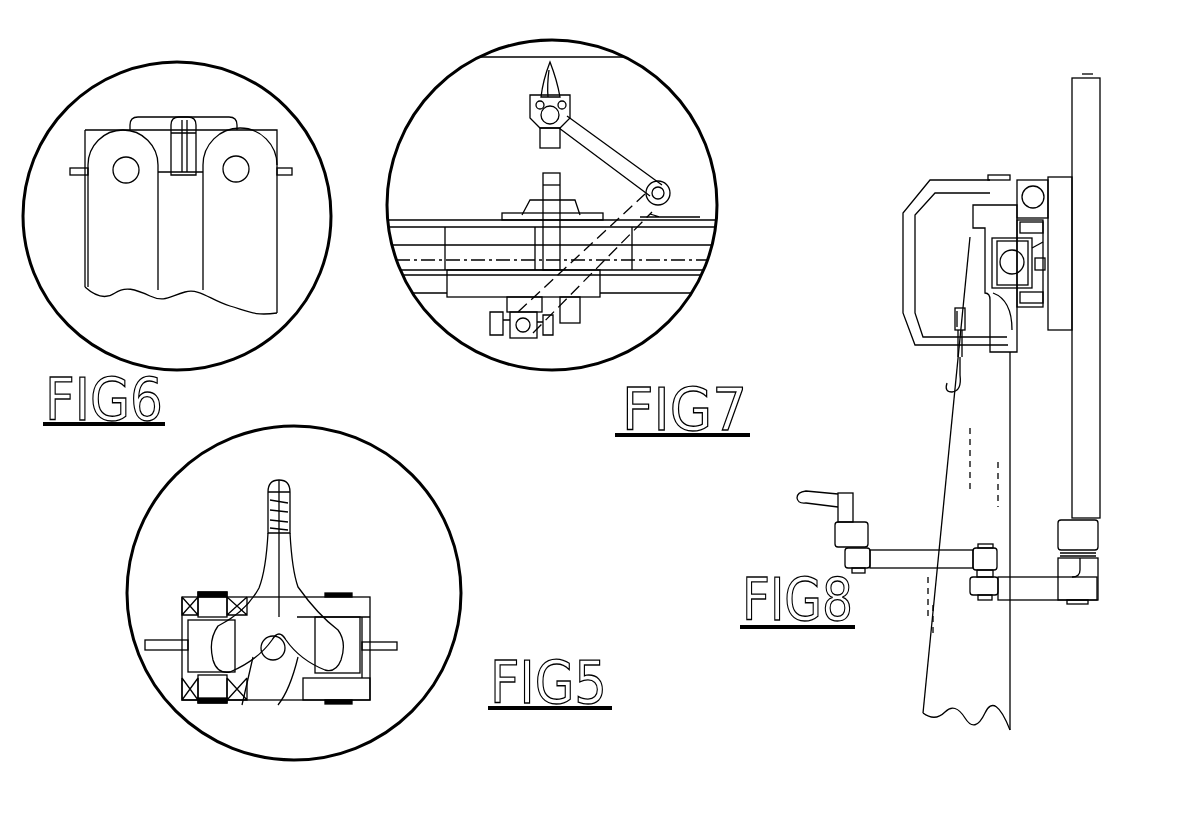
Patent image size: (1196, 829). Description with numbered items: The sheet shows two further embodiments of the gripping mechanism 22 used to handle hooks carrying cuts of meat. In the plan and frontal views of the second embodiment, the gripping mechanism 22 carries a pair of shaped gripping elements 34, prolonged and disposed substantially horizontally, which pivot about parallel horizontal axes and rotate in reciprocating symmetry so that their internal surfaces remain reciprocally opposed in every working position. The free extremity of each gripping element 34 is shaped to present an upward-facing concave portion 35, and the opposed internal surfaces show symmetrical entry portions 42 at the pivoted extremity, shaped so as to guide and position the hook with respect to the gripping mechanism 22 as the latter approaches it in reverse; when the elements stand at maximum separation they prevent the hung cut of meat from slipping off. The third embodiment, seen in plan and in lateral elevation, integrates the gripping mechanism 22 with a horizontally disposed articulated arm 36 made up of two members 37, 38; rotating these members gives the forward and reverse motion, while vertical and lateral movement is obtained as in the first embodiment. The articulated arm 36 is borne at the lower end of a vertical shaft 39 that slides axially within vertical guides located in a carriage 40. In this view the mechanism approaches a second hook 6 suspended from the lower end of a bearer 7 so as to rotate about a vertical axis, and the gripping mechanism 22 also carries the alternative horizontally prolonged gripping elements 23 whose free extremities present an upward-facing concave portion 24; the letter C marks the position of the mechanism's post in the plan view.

In FIG. 8, the second hook 6 is at (957, 378).
In FIG. 8, the bearer 7 is at (950, 320).
In FIG. 7, the gripping mechanism 22 is at (582, 107).
In FIG. 8, the gripping mechanism 22 is at (860, 500).
In FIG. 8, the gripping element 23 is at (820, 508).
In FIG. 8, the concave shaped portion 24 is at (808, 491).
In FIG. 6, the gripping element 34 is at (172, 138).
In FIG. 5, the gripping element 34 is at (297, 573).
In FIG. 5, the concave portion 35 is at (290, 512).
In FIG. 7, the articulated arm 36 is at (678, 192).
In FIG. 8, the articulated arm 36 is at (990, 545).
In FIG. 7, the member 37 is at (627, 155).
In FIG. 8, the member 37 is at (900, 570).
In FIG. 7, the member 38 is at (667, 218).
In FIG. 8, the member 38 is at (1047, 600).
In FIG. 8, the vertical shaft 39 is at (1098, 287).
In FIG. 8, the carriage 40 is at (1033, 177).
In FIG. 5, the entry portion 42 is at (292, 660).
In FIG. 7, the post C is at (537, 190).